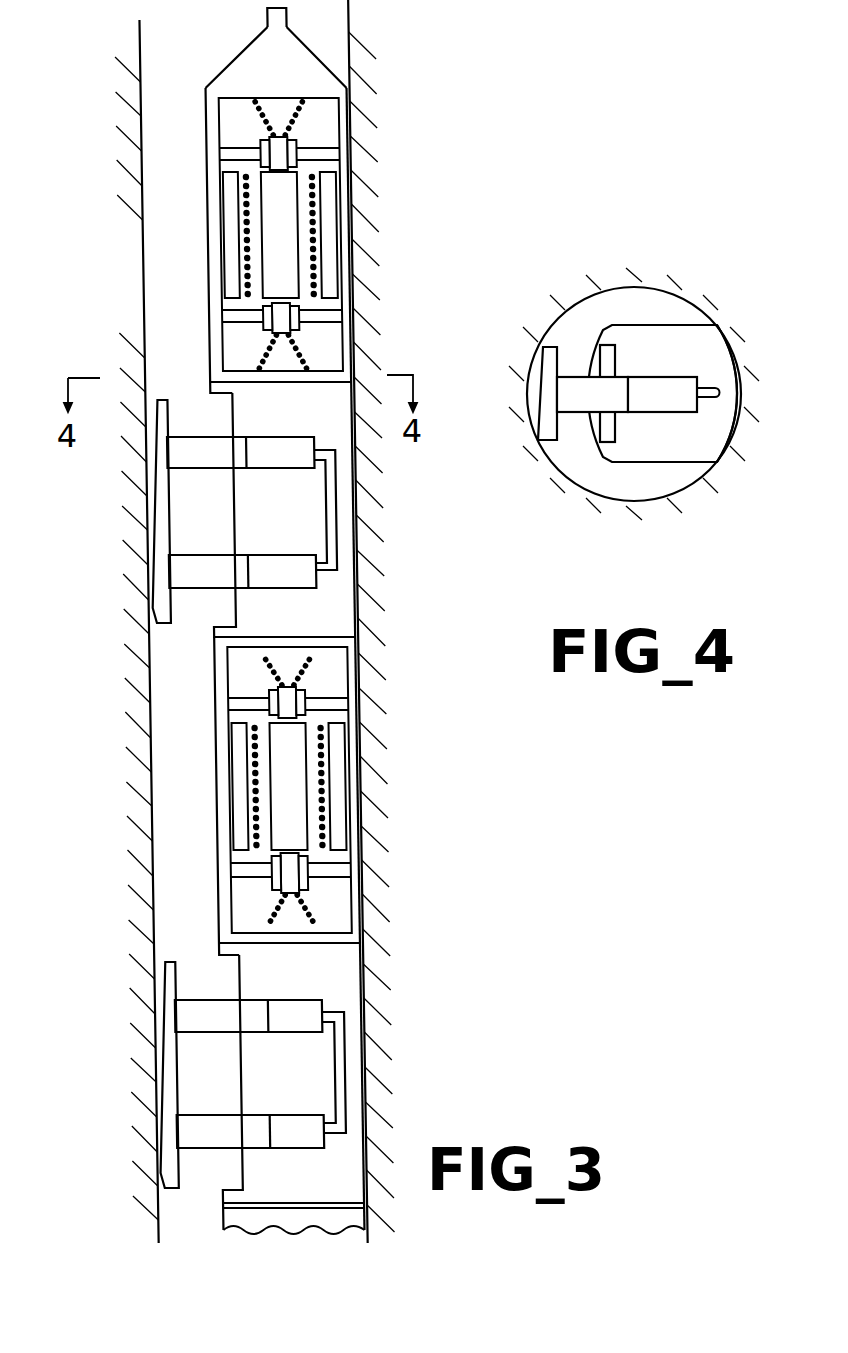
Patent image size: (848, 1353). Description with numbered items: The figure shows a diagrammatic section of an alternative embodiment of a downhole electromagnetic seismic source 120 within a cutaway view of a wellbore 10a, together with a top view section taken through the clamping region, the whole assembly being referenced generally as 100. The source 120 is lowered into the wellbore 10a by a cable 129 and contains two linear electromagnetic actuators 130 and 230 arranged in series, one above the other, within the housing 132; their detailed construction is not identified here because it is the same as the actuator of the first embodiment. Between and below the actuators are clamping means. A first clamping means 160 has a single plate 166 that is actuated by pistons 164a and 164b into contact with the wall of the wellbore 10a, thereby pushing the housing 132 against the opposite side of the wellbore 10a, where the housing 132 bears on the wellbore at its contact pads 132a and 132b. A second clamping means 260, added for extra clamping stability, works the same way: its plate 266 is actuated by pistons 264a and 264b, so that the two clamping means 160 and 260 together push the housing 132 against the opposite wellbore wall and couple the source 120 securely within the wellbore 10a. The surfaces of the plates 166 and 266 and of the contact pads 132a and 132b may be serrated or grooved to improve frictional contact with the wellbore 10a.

In FIG. 3, the wellbore 10a is at (143, 296).
In FIG. 4, the wellbore 10a is at (575, 487).
In FIG. 3, the borehole 100 is at (92, 962).
In FIG. 4, the borehole 100 is at (740, 578).
In FIG. 3, the electromagnetic source 120 is at (428, 92).
In FIG. 3, the cable 129 is at (287, 17).
In FIG. 3, the linear electromagnetic actuator 130 is at (101, 373).
In FIG. 3, the housing 132 is at (348, 213).
In FIG. 4, the housing 132 is at (662, 325).
In FIG. 4, the contact pad 132a is at (723, 337).
In FIG. 4, the contact pad 132b is at (723, 452).
In FIG. 3, the clamping means 160 is at (109, 390).
In FIG. 3, the piston 164a is at (207, 450).
In FIG. 4, the piston 164a is at (573, 377).
In FIG. 3, the piston 164b is at (208, 565).
In FIG. 4, the piston 164b is at (674, 394).
In FIG. 3, the plate 166 is at (153, 566).
In FIG. 4, the plate 166 is at (531, 420).
In FIG. 3, the linear electromagnetic actuator 230 is at (109, 640).
In FIG. 3, the second clamping means 260 is at (116, 960).
In FIG. 3, the piston 264a is at (208, 1010).
In FIG. 3, the piston 264b is at (212, 1128).
In FIG. 3, the plate 266 is at (159, 1148).